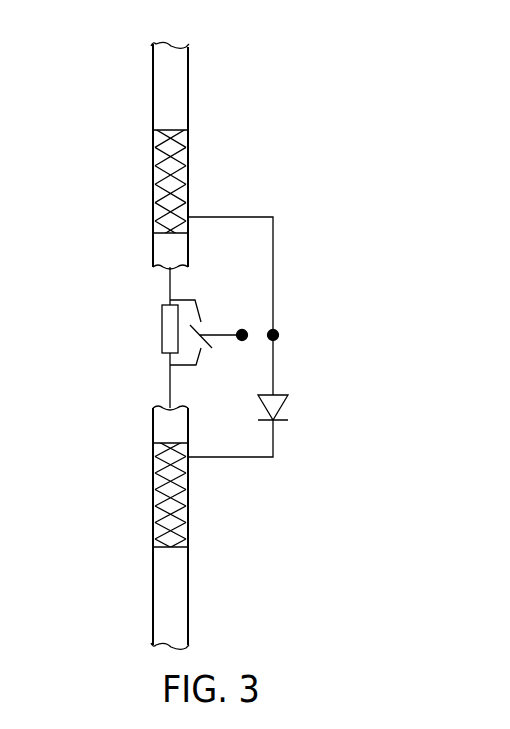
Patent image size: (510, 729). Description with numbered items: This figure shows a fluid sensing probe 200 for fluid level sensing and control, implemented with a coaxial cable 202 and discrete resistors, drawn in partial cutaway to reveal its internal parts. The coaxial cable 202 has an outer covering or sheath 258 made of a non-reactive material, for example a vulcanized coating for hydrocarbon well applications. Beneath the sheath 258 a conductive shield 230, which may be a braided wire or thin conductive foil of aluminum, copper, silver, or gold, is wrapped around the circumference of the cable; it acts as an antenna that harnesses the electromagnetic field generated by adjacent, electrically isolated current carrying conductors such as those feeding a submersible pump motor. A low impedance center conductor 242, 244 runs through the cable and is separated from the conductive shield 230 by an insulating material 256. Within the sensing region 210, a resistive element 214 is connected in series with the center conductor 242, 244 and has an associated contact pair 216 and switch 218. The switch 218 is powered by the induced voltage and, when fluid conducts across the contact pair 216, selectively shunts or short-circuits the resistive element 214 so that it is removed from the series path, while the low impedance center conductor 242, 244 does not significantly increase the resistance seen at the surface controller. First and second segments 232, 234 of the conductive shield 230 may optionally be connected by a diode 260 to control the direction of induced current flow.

The probe 200 is at (246, 64).
The coaxial cable 202 is at (151, 90).
The conductive shield 230 is at (194, 190).
The first segment of conductive shield 232 is at (275, 232).
The second segment of conductive shield 234 is at (258, 458).
The contact pair 216 is at (285, 325).
The switch 218 is at (207, 313).
The diode 260 is at (294, 406).
The sensing region 210 is at (72, 267).
The center conductor 242 is at (168, 290).
The resistive element 214 is at (160, 326).
The center conductor 244 is at (168, 385).
The insulating material 256 is at (163, 432).
The sheath 258 is at (165, 605).